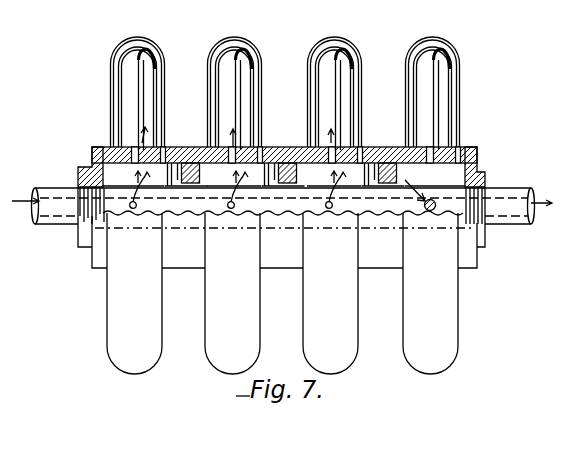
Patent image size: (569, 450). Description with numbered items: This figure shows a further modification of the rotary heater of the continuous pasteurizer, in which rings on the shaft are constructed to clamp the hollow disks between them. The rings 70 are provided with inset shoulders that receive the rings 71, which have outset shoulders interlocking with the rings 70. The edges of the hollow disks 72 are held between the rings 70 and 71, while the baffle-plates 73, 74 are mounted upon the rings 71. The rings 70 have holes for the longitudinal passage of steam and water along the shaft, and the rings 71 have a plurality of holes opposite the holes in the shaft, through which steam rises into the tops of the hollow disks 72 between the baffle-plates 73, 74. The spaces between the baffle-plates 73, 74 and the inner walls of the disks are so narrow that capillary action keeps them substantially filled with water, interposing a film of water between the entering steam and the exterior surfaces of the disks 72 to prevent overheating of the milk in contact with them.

The ring 70 is at (175, 147).
The ring 71 is at (110, 147).
The hollow disk 72 is at (210, 67).
The baffle-plate 73 is at (112, 83).
The baffle-plate 74 is at (242, 93).